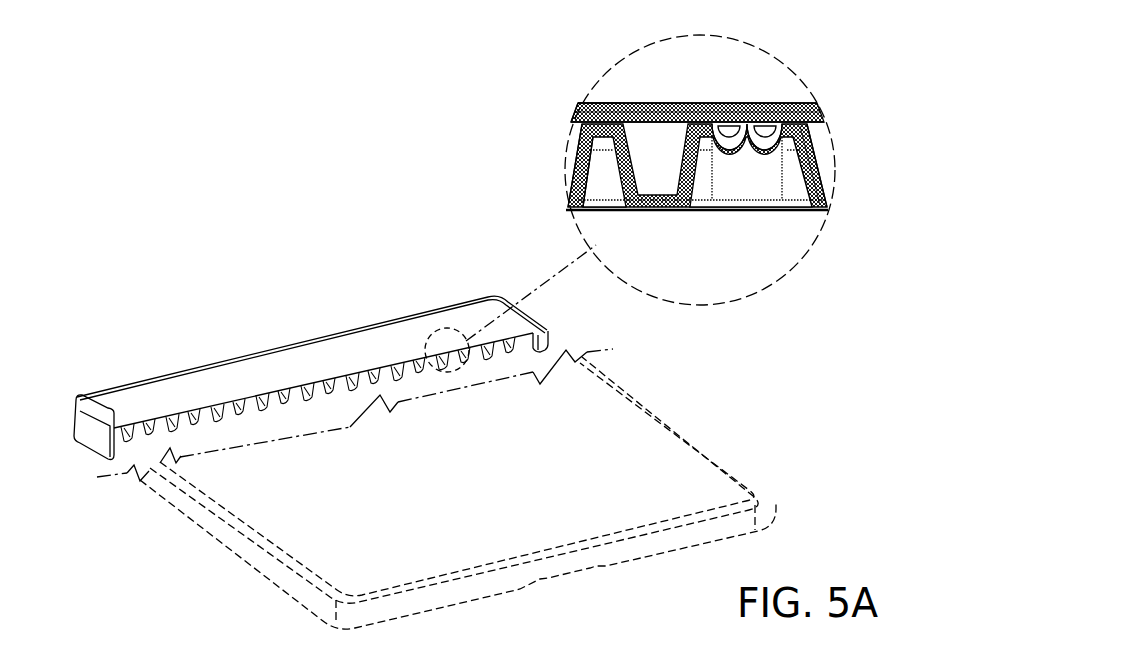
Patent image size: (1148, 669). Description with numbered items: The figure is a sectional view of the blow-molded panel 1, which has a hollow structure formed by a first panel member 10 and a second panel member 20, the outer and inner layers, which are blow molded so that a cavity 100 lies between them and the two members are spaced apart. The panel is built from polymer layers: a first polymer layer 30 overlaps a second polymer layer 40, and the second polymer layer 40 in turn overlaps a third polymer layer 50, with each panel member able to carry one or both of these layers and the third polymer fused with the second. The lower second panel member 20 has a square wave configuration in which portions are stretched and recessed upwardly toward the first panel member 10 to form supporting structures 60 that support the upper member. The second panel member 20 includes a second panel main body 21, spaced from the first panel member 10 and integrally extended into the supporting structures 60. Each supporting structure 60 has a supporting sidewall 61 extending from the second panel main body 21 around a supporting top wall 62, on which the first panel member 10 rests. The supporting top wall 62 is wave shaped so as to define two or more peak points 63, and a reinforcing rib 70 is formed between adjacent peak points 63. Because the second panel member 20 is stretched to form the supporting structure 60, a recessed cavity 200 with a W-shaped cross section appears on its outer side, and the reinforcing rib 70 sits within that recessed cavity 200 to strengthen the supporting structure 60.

The blow-molded panel 1 is at (127, 331).
The first panel member 10 is at (222, 380).
The second panel member 20 is at (139, 453).
The second panel main body 21 is at (662, 211).
The first polymer layer 30 is at (797, 103).
The second polymer layer 40 is at (815, 105).
The third polymer layer 50 is at (822, 118).
The supporting structure 60 is at (585, 217).
The supporting sidewall 61 is at (580, 165).
The supporting top wall 62 is at (578, 107).
The peak point 63 is at (598, 102).
The reinforcing rib 70 is at (762, 150).
The cavity 100 is at (638, 117).
The recessed cavity 200 is at (790, 185).